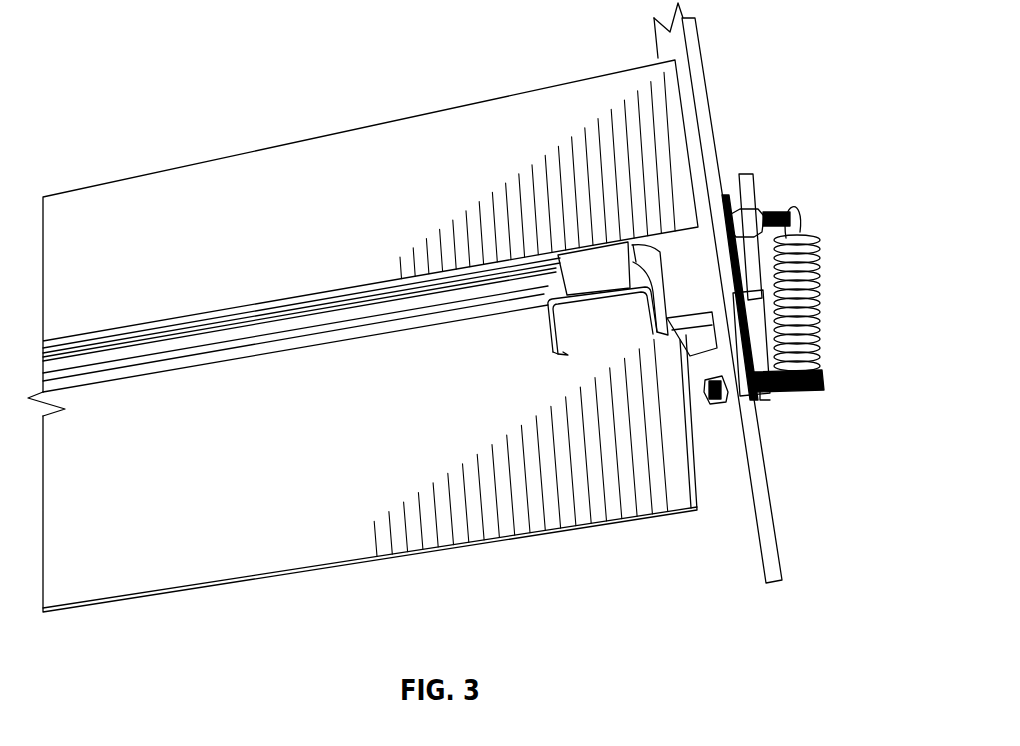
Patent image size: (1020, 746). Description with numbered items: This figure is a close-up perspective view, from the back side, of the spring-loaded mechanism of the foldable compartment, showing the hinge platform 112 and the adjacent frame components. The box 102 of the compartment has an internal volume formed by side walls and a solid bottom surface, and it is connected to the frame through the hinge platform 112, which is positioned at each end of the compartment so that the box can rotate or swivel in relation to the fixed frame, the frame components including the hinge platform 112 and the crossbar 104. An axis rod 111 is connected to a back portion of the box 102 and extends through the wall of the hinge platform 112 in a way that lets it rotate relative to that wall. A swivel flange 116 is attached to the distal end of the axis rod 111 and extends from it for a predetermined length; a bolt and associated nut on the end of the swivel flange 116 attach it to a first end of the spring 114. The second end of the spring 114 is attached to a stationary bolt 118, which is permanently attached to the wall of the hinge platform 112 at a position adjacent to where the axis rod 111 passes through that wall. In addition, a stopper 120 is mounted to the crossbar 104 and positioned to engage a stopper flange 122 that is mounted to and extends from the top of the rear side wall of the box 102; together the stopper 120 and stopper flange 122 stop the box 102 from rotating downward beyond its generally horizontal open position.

The box 102 is at (212, 562).
The crossbar 104 is at (348, 140).
The axis rod 111 is at (718, 405).
The hinge platform 112 is at (836, 351).
The spring 114 is at (823, 275).
The swivel flange 116 is at (757, 185).
The stationary bolt 118 is at (795, 395).
The stopper 120 is at (578, 274).
The stopper flange 122 is at (548, 345).